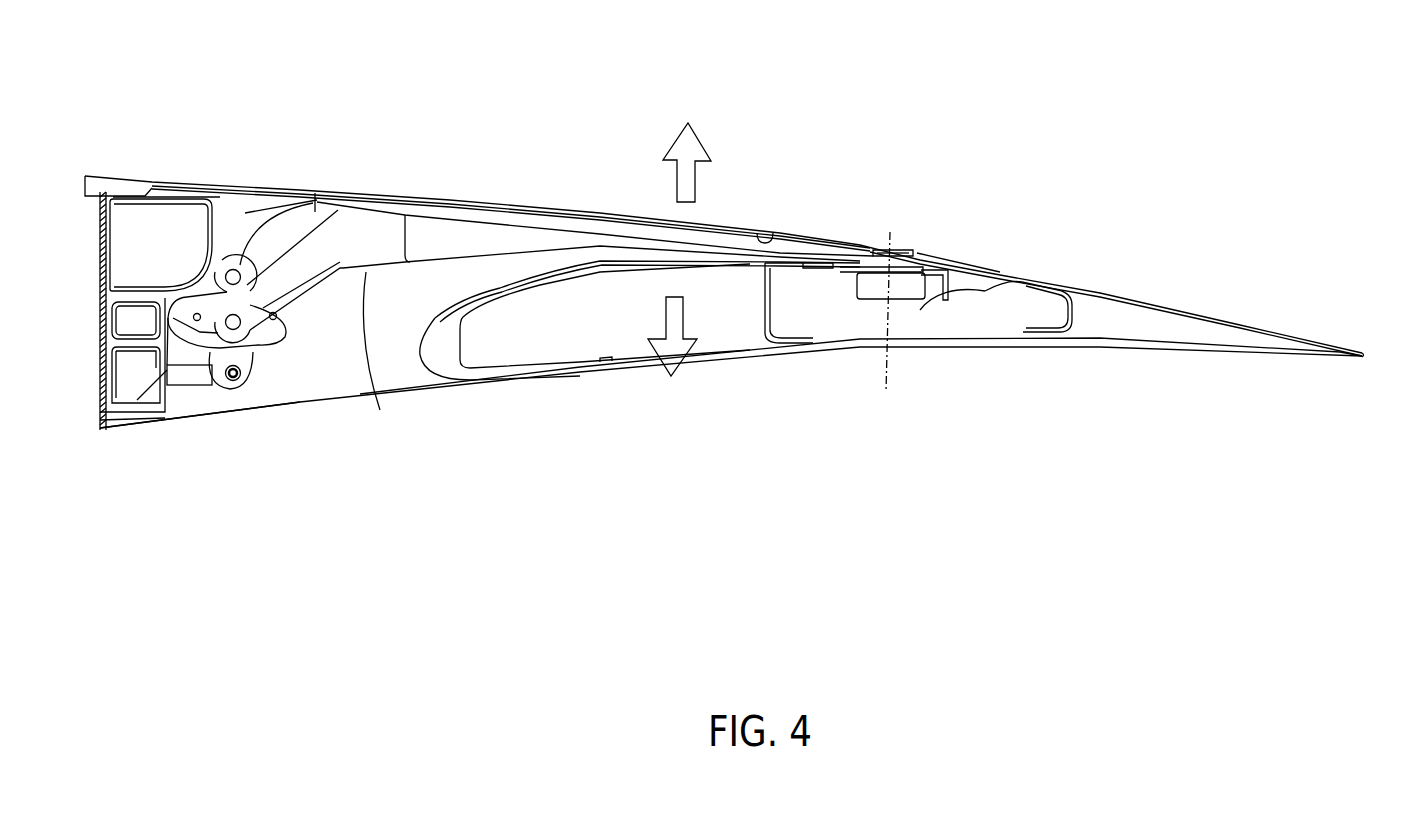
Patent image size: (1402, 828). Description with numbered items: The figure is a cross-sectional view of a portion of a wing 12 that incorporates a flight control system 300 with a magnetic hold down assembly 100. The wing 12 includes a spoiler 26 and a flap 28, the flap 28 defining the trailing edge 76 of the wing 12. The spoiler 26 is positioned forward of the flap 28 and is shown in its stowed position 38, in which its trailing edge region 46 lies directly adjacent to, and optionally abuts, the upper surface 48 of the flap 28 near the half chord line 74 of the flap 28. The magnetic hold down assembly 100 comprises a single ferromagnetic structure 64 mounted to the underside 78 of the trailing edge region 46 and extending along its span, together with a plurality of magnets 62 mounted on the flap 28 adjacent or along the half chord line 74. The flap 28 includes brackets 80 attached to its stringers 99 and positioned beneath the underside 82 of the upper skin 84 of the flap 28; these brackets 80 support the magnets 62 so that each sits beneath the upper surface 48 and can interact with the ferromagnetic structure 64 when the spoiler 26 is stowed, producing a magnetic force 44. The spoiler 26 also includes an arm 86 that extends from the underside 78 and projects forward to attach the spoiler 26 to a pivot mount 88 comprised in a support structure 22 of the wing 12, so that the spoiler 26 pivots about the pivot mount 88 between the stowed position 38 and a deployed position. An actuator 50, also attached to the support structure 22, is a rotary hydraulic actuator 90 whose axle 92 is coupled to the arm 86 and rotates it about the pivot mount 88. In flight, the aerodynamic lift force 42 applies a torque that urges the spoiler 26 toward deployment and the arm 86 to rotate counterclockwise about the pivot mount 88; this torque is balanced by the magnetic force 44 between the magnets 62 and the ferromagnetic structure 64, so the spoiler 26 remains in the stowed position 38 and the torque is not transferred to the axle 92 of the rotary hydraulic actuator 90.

The wing 12 is at (947, 50).
The flight control system 300 is at (960, 76).
The support structure 22 is at (137, 230).
The spoiler 26 is at (519, 204).
The flap 28 is at (1122, 291).
The stowed position 38 is at (723, 198).
The aerodynamic lift force 42 is at (668, 182).
The magnetic force 44 is at (653, 343).
The trailing edge region 46 is at (927, 232).
The upper surface 48 is at (1022, 282).
The actuator 50 is at (292, 348).
The magnets 62 is at (867, 302).
The ferromagnetic structure 64 is at (845, 229).
The half chord line 74 is at (892, 357).
The trailing edge 76 is at (1362, 356).
The underside 78 is at (752, 228).
The brackets 80 is at (936, 298).
The underside 82 is at (728, 262).
The upper skin 84 is at (1080, 280).
The arm 86 is at (367, 380).
The pivot mount 88 is at (226, 264).
The rotary hydraulic actuator 90 is at (267, 352).
The axle 92 is at (245, 213).
The stringers 99 is at (755, 265).
The magnetic hold down assembly 100 is at (972, 220).